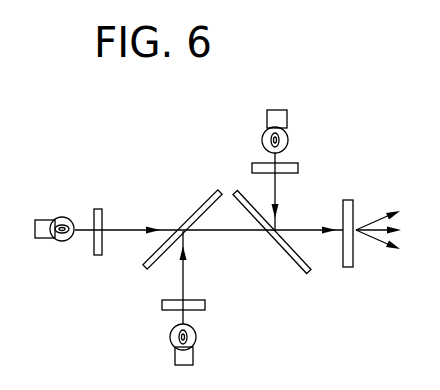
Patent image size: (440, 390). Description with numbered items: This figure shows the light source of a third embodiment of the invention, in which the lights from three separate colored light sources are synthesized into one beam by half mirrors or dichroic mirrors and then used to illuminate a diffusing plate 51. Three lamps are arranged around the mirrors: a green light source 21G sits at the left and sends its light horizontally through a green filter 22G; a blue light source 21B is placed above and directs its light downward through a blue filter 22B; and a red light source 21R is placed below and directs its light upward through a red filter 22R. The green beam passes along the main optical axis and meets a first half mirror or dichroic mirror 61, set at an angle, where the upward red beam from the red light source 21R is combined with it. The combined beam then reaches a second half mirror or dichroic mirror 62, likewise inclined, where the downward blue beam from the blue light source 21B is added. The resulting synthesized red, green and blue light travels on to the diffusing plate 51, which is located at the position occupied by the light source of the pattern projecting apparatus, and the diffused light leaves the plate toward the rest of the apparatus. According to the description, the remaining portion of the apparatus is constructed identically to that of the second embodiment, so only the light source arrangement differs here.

The green light source 21G is at (45, 220).
The green filter 22G is at (97, 209).
The half mirror or dichroic mirror 61 is at (196, 205).
The blue light source 21B is at (283, 121).
The blue filter 22B is at (298, 168).
The half mirror or dichroic mirror 62 is at (306, 272).
The diffusing plate 51 is at (347, 263).
The red filter 22R is at (206, 305).
The red light source 21R is at (194, 353).